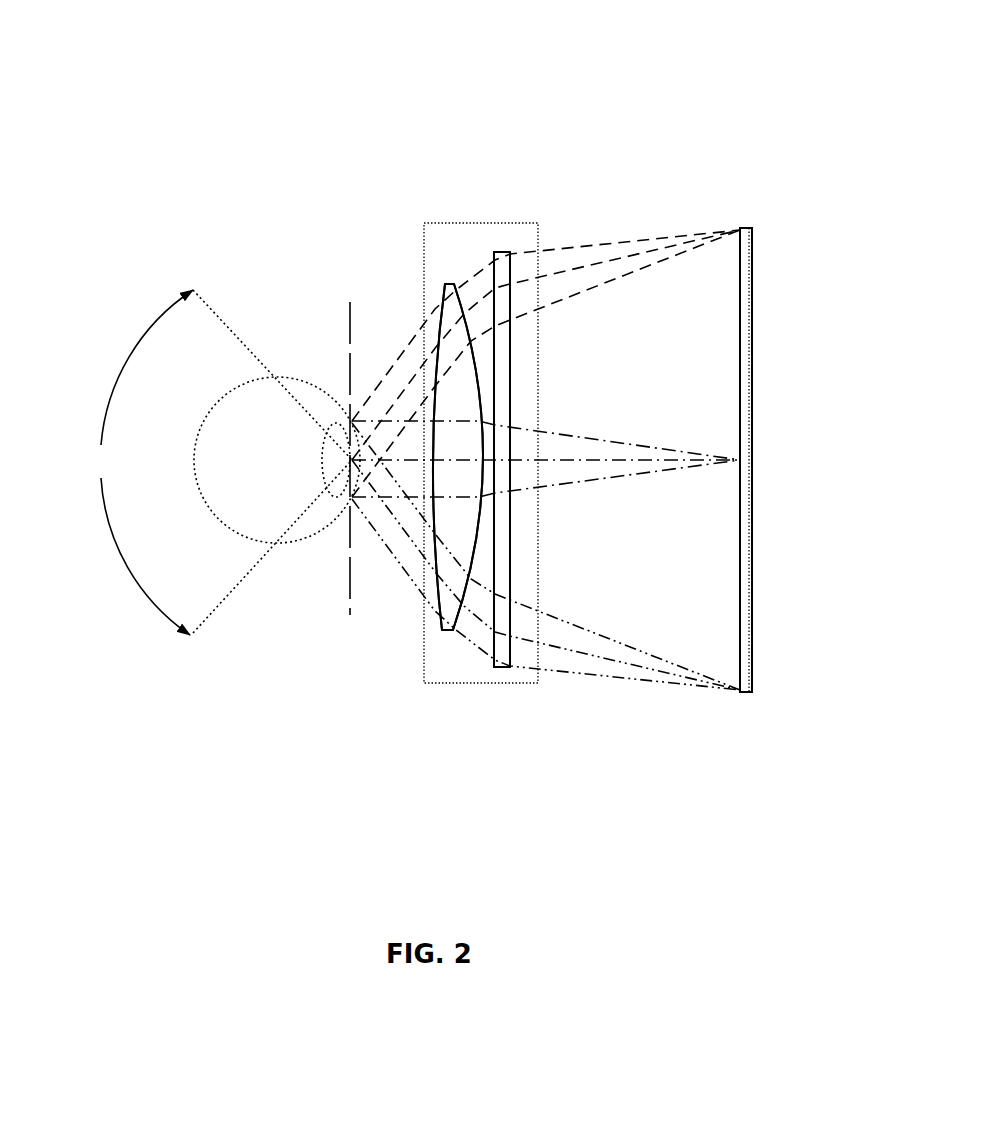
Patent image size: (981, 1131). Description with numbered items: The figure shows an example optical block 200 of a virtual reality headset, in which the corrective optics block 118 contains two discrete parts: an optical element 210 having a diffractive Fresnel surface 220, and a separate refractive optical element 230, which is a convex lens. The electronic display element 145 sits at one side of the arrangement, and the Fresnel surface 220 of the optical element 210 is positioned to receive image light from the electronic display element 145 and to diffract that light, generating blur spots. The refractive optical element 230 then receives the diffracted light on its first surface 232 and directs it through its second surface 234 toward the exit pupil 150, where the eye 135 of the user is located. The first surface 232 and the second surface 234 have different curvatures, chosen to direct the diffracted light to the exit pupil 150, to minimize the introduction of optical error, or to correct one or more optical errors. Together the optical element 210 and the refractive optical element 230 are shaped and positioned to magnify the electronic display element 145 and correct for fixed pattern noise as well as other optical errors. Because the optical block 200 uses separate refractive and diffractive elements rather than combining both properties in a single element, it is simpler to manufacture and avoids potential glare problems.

The optical block 200 is at (106, 63).
The eye 135 is at (203, 422).
The exit pupil 150 is at (342, 587).
The corrective optics block 118 is at (472, 222).
The refractive optical element 230 is at (453, 377).
The second surface 234 is at (438, 603).
The first surface 232 is at (462, 615).
The optical element 210 is at (510, 252).
The Fresnel surface 220 is at (512, 557).
The electronic display element 145 is at (750, 228).